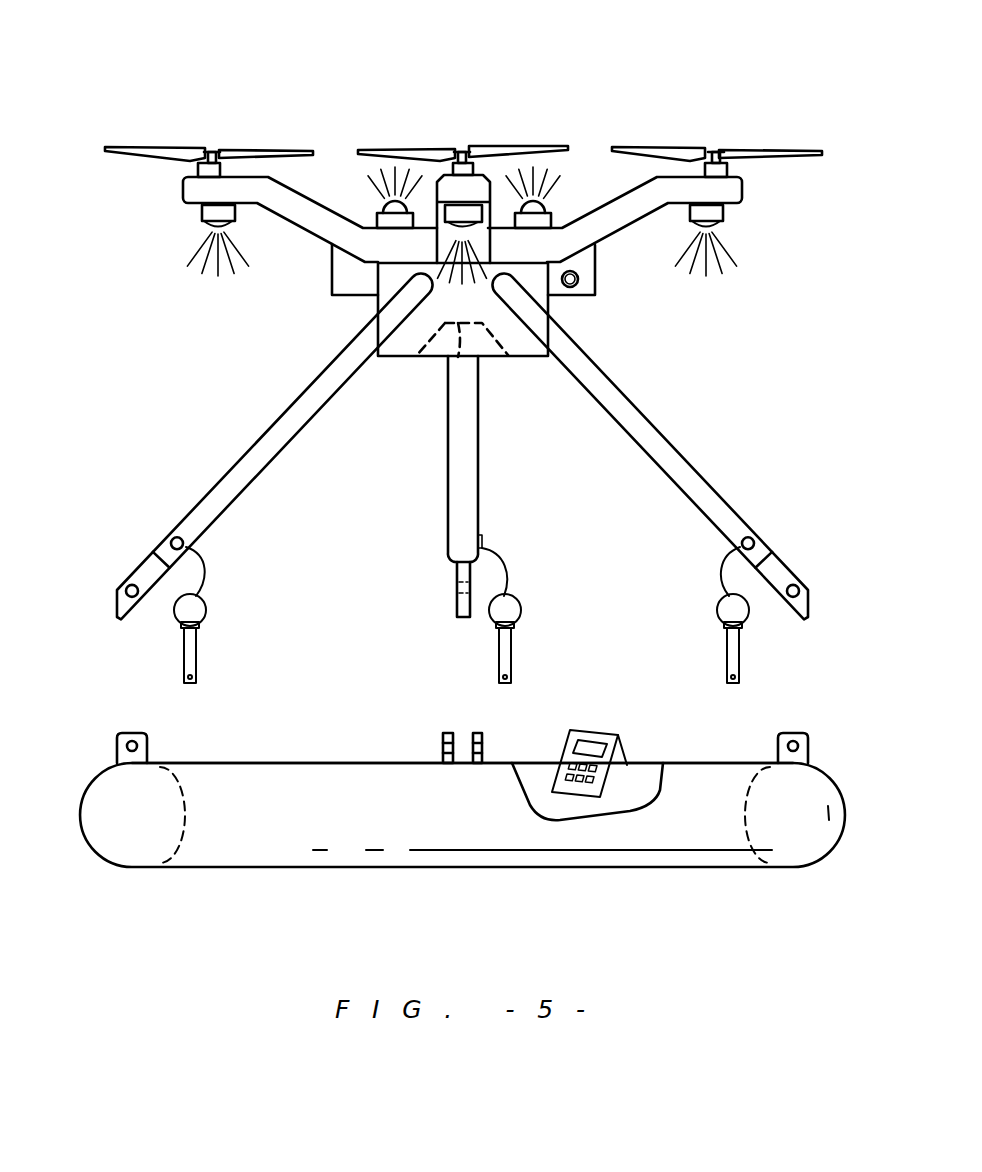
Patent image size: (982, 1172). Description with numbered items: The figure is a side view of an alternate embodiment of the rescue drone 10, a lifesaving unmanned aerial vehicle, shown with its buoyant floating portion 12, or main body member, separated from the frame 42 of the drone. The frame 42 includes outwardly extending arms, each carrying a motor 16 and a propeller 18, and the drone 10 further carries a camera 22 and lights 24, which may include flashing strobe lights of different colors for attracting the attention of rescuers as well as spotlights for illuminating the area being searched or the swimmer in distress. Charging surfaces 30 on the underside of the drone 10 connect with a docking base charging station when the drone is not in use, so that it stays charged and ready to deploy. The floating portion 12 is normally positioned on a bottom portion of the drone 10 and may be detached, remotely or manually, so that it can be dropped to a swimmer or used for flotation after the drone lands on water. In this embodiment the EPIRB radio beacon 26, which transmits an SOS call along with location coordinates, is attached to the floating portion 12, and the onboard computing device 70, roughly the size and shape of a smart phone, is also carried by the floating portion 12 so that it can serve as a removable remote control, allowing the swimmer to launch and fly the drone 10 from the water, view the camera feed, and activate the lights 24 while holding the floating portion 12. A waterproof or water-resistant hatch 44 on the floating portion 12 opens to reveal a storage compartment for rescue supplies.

The rescue drone 10 is at (272, 76).
The floating portion 12 is at (247, 840).
The motor 16 is at (192, 165).
The propeller 18 is at (153, 146).
The camera 22 is at (595, 283).
The lights 24 is at (197, 212).
The EPIRB radio beacon 26 is at (347, 273).
The charging surfaces 30 is at (458, 357).
The frame 42 is at (237, 477).
The hatch 44 is at (320, 780).
The onboard computing device 70 is at (597, 730).